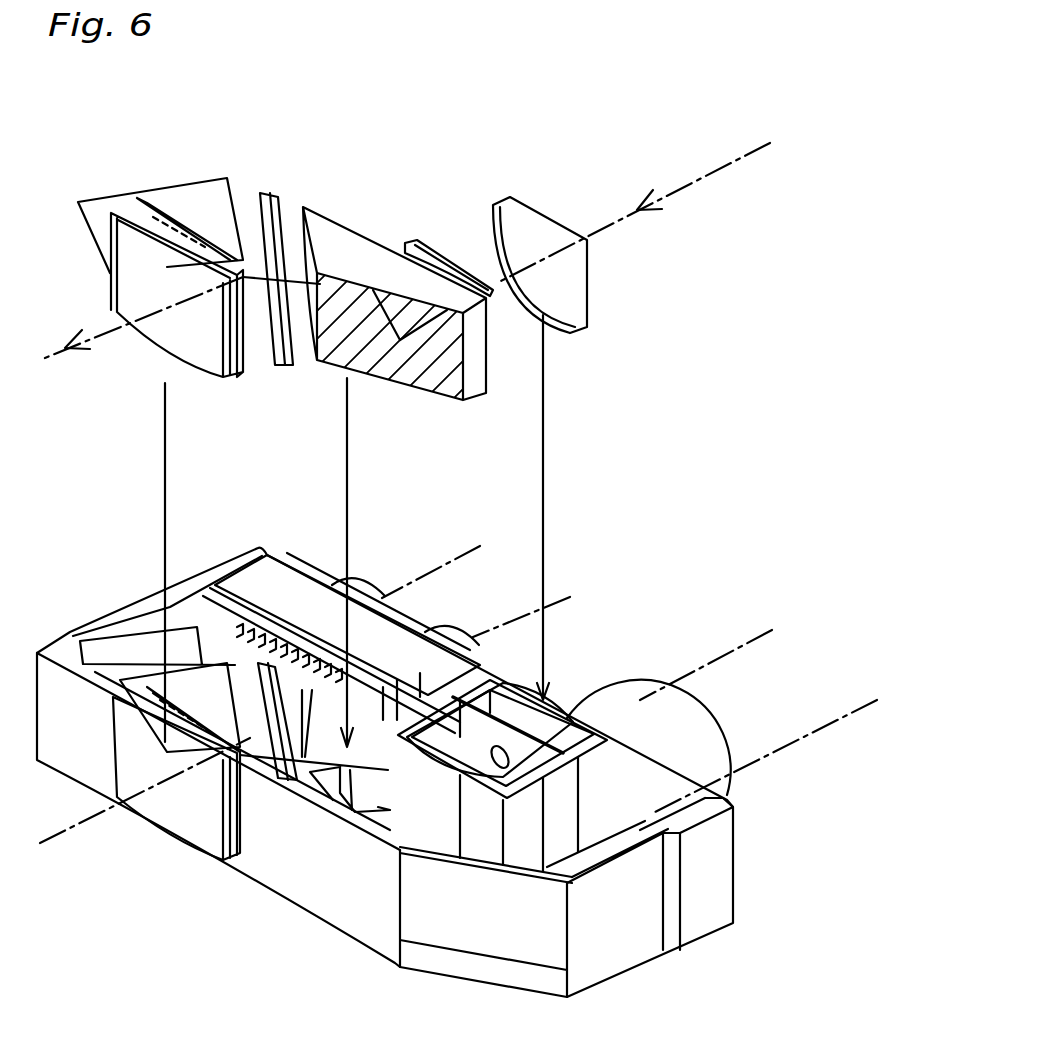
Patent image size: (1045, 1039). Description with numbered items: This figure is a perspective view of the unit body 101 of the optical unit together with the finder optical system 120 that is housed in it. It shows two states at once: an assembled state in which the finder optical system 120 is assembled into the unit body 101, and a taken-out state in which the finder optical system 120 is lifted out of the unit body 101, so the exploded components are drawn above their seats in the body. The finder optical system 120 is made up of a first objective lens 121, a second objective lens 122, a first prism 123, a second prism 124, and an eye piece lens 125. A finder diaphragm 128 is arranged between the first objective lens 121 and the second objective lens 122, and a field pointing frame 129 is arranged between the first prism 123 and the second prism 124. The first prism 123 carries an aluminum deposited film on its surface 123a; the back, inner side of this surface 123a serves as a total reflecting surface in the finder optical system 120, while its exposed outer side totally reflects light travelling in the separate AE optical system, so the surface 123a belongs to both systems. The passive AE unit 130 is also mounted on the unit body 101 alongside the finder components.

The unit body 101 is at (610, 957).
The finder optical system 120 is at (507, 130).
The first objective lens 121 is at (507, 197).
The second objective lens 122 is at (423, 250).
The first prism 123 is at (340, 242).
The surface of the first prism 123a is at (383, 357).
The second prism 124 is at (208, 205).
The eye piece lens 125 is at (145, 215).
The finder diaphragm 128 is at (577, 695).
The field pointing frame 129 is at (275, 212).
The passive AE unit 130 is at (263, 583).